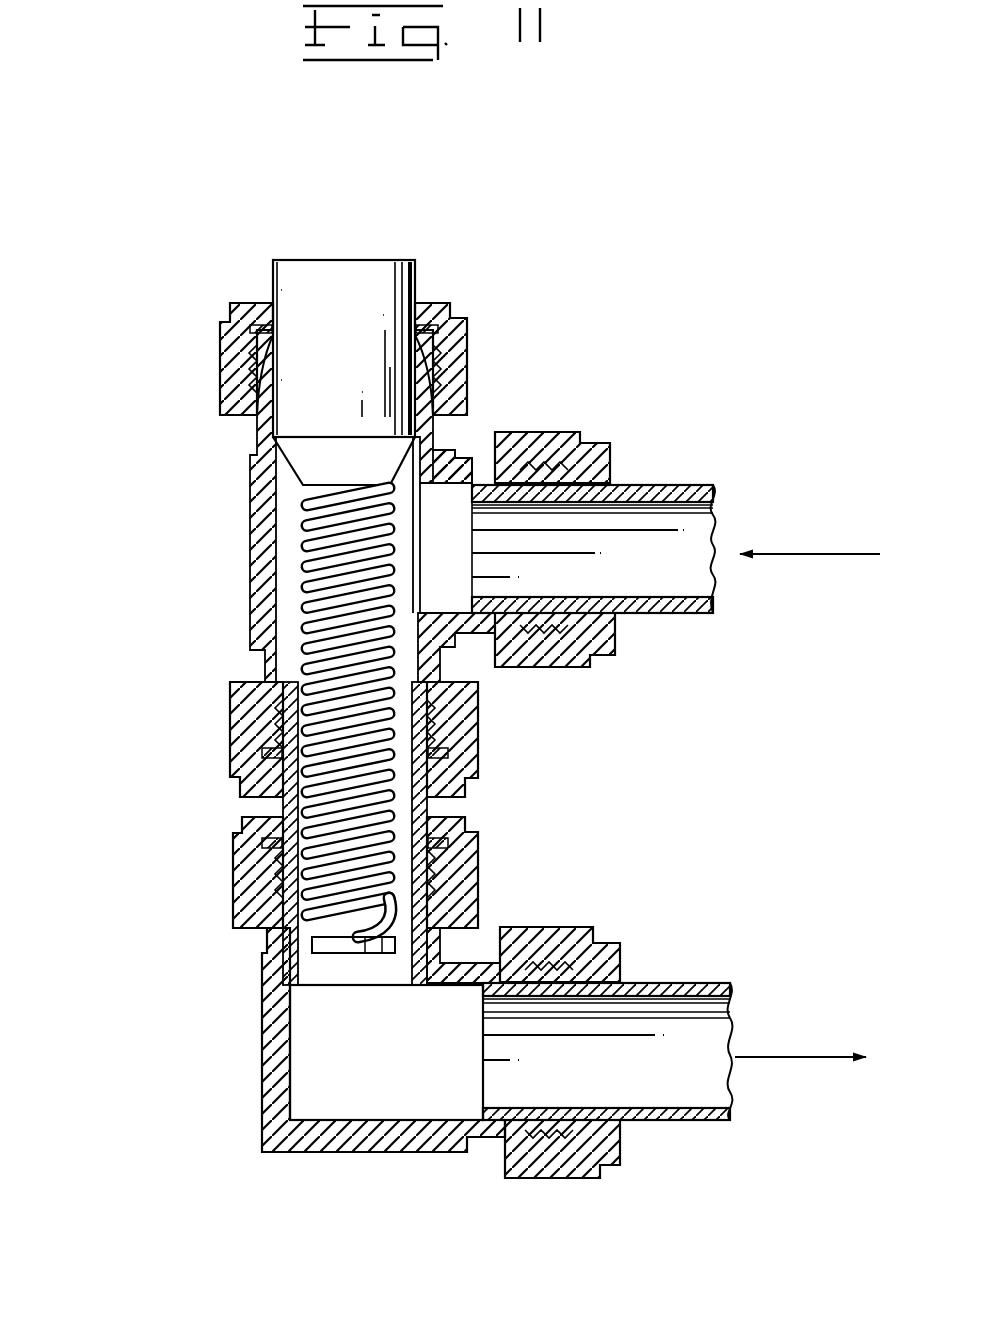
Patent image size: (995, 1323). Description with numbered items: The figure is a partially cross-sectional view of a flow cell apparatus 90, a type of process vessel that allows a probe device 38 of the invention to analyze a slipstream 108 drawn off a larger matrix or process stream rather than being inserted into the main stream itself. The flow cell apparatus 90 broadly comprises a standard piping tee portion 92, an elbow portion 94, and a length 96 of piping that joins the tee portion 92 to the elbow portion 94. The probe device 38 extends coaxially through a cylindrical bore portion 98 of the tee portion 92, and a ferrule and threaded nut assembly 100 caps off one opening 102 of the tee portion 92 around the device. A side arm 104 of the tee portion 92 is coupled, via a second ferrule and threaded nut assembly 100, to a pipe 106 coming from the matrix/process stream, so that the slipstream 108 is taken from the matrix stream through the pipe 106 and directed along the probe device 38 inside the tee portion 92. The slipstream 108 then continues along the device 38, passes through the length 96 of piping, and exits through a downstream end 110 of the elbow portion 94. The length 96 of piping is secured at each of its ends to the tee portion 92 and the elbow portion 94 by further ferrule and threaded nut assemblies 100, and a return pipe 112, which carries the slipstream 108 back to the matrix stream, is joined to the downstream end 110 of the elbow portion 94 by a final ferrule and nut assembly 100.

The probe device 38 is at (272, 283).
The flow cell apparatus 90 is at (125, 768).
The tee portion 92 is at (207, 575).
The elbow portion 94 is at (207, 1127).
The length of piping 96 is at (427, 806).
The cylindrical bore portion 98 is at (275, 532).
The ferrule and threaded nut assembly 100 is at (470, 348).
The opening 102 is at (407, 373).
The side arm 104 is at (466, 458).
The pipe 106 is at (660, 485).
The slipstream 108 is at (790, 554).
The downstream end 110 is at (548, 1110).
The return pipe 112 is at (668, 982).